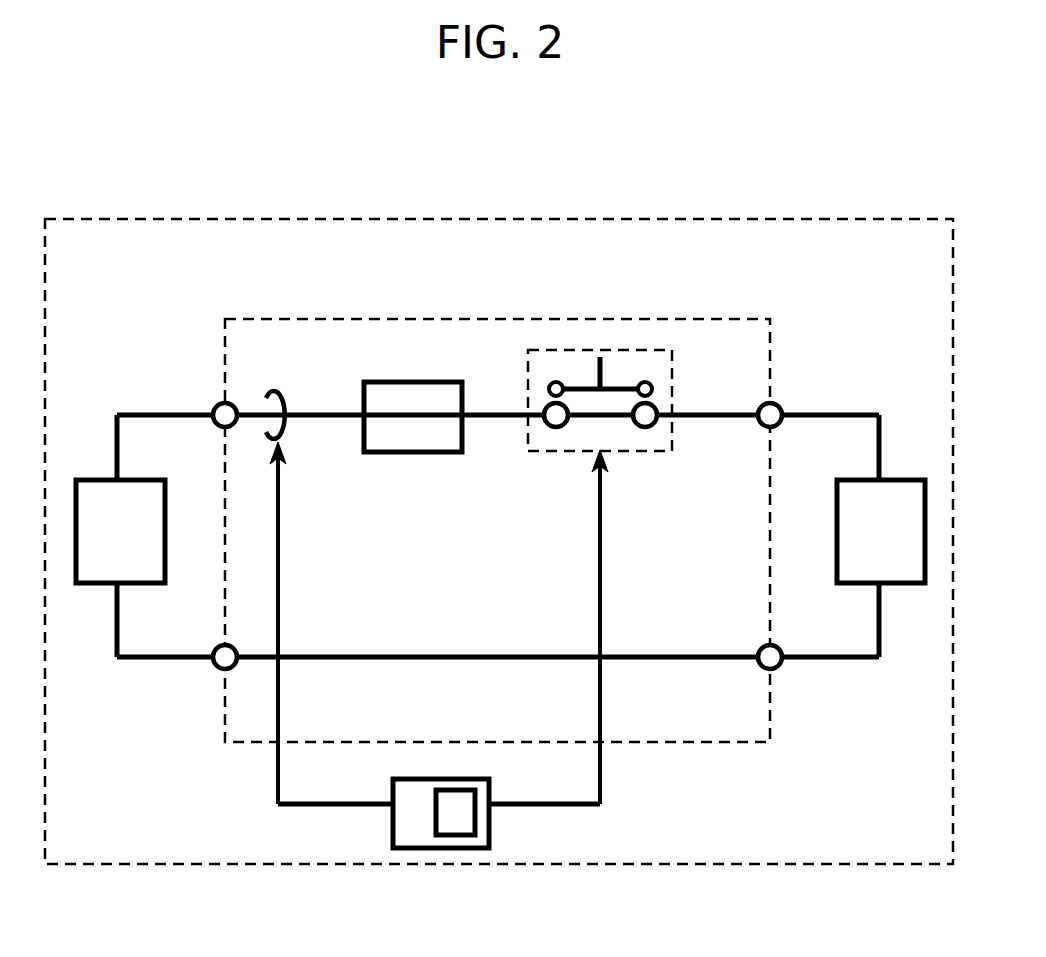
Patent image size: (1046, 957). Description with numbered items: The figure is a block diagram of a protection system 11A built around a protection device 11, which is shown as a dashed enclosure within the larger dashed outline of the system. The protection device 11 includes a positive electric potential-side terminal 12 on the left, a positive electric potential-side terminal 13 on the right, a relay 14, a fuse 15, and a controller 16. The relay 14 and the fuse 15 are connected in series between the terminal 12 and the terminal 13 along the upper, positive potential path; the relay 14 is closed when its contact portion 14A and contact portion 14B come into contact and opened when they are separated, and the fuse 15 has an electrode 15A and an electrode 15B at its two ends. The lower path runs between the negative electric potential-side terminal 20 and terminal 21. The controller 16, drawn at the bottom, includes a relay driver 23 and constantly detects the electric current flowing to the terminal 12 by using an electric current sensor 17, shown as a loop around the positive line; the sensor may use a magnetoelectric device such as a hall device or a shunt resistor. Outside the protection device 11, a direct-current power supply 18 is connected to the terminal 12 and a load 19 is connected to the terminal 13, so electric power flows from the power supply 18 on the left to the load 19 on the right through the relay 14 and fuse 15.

The protection system 11A is at (500, 218).
The protection device 11 is at (737, 319).
The terminal 12 is at (222, 403).
The terminal 13 is at (773, 403).
The relay 14 is at (600, 350).
The contact portion 14A is at (551, 382).
The contact portion 14B is at (556, 427).
The fuse 15 is at (407, 382).
The electrode 15A is at (364, 440).
The electrode 15B is at (462, 440).
The controller 16 is at (445, 779).
The electric current sensor 17 is at (275, 393).
The direct-current power supply 18 is at (80, 480).
The load 19 is at (918, 480).
The terminal 20 is at (222, 669).
The terminal 21 is at (775, 669).
The relay driver 23 is at (470, 790).